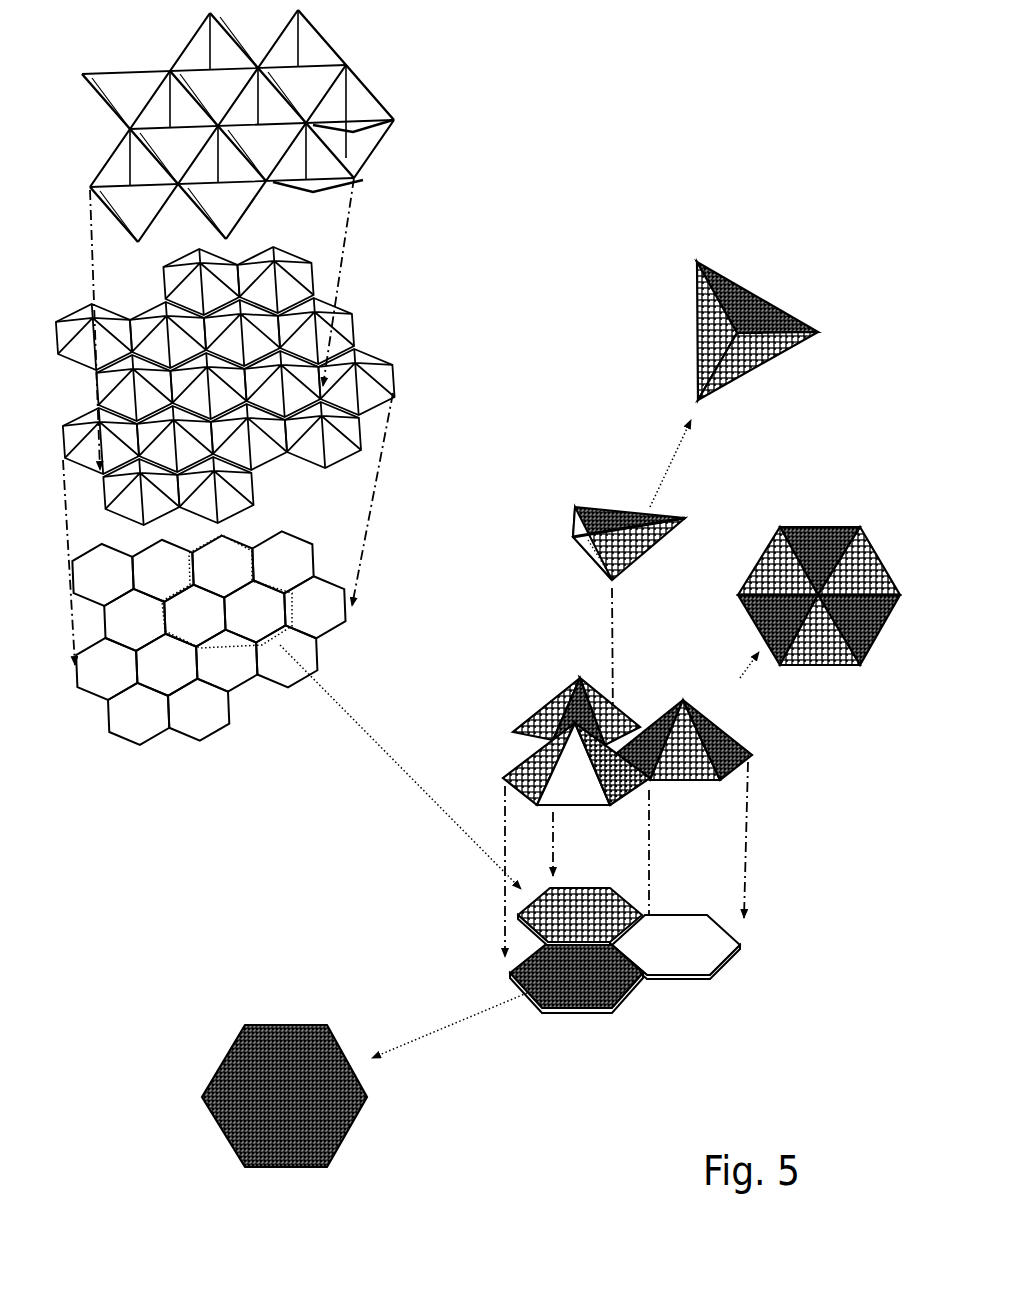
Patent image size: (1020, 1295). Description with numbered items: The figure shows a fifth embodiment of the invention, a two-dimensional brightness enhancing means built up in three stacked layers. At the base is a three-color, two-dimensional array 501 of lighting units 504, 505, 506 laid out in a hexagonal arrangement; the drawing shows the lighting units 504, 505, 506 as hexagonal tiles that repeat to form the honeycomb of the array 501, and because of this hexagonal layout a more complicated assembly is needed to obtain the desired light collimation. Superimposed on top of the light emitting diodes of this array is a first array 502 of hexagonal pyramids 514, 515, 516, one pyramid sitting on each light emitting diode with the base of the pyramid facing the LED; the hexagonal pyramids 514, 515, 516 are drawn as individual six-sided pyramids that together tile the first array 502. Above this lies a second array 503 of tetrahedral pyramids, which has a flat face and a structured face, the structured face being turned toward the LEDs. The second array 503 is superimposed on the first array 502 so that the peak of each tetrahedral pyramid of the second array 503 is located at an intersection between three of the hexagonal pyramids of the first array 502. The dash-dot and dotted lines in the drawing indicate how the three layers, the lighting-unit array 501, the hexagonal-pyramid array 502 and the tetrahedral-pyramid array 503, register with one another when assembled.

The two-dimensional array of lighting units 501 is at (357, 643).
The first array of hexagonal pyramids 502 is at (410, 396).
The second array of tetrahedral pyramids 503 is at (404, 141).
The lighting unit 504 is at (703, 955).
The lighting unit 505 is at (597, 897).
The lighting unit 506 is at (603, 992).
The hexagonal pyramid 514 is at (730, 753).
The hexagonal pyramid 515 is at (577, 682).
The hexagonal pyramid 516 is at (523, 780).